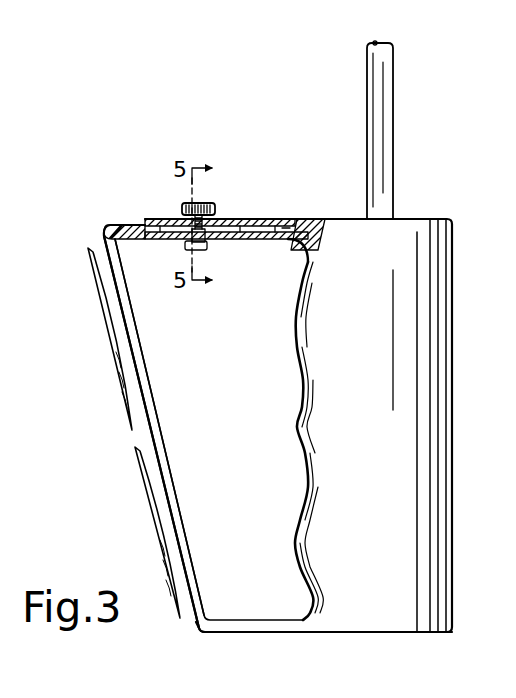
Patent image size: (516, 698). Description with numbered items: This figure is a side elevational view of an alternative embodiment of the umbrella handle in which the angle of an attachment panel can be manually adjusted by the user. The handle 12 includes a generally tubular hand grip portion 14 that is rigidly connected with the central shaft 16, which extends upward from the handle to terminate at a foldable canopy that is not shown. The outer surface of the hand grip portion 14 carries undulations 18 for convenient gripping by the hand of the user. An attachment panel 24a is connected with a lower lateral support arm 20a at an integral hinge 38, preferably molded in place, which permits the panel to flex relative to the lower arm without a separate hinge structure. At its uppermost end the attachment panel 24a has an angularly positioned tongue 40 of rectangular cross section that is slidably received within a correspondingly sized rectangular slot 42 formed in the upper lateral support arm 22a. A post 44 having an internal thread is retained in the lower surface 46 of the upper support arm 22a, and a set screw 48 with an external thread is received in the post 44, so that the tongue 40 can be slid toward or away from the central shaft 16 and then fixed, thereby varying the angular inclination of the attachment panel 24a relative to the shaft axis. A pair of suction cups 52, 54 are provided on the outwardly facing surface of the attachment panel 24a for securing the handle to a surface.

The handle 12 is at (467, 193).
The hand grip portion 14 is at (415, 238).
The central shaft 16 is at (384, 151).
The undulations 18 is at (293, 427).
The lower lateral support arm 20a is at (300, 634).
The upper lateral support arm 22a is at (266, 218).
The attachment panel 24a is at (143, 426).
The integral hinge 38 is at (199, 635).
The tongue 40 is at (126, 229).
The slot 42 is at (287, 219).
The post 44 is at (190, 242).
The lower surface 46 is at (270, 241).
The set screw 48 is at (186, 206).
The suction cup 52 is at (113, 363).
The suction cup 54 is at (150, 516).